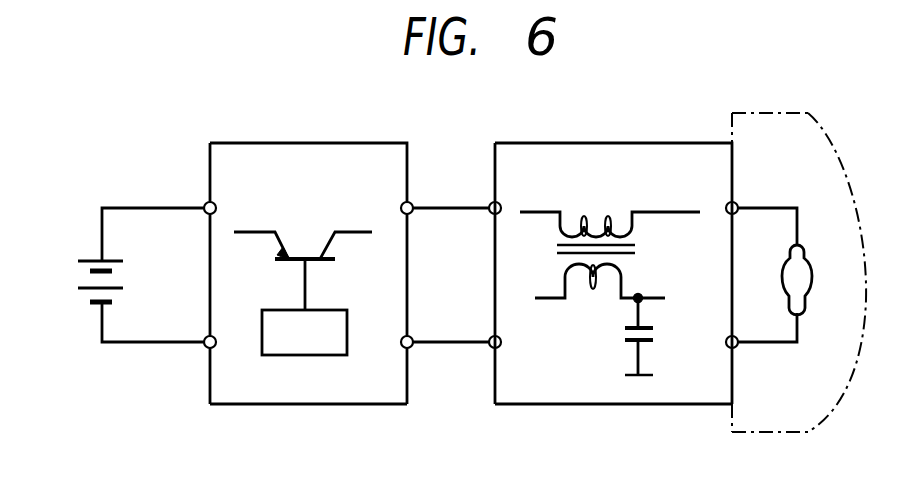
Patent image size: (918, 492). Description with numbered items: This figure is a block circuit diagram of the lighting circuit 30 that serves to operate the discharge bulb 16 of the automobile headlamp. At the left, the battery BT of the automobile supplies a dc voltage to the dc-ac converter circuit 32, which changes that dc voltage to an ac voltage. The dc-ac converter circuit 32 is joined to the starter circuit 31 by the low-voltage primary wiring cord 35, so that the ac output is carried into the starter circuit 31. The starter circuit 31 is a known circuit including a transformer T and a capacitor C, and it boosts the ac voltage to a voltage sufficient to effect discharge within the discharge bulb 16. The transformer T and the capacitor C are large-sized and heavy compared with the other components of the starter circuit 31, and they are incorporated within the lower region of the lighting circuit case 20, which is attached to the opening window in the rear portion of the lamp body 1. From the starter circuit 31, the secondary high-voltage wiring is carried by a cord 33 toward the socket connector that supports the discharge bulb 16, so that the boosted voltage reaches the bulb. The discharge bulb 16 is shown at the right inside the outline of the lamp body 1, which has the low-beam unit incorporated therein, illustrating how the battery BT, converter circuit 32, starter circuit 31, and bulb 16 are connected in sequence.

The lamp body 1 is at (830, 142).
The discharge bulb 16 is at (800, 282).
The lighting circuit case 20 is at (556, 143).
The lighting circuit 30 is at (305, 128).
The starter circuit 31 is at (560, 385).
The dc-ac converter circuit 32 is at (247, 407).
The cord 33 is at (681, 212).
The low-voltage primary wiring cord 35 is at (448, 204).
The battery BT is at (80, 274).
The transformer T is at (600, 212).
The capacitor C is at (658, 333).